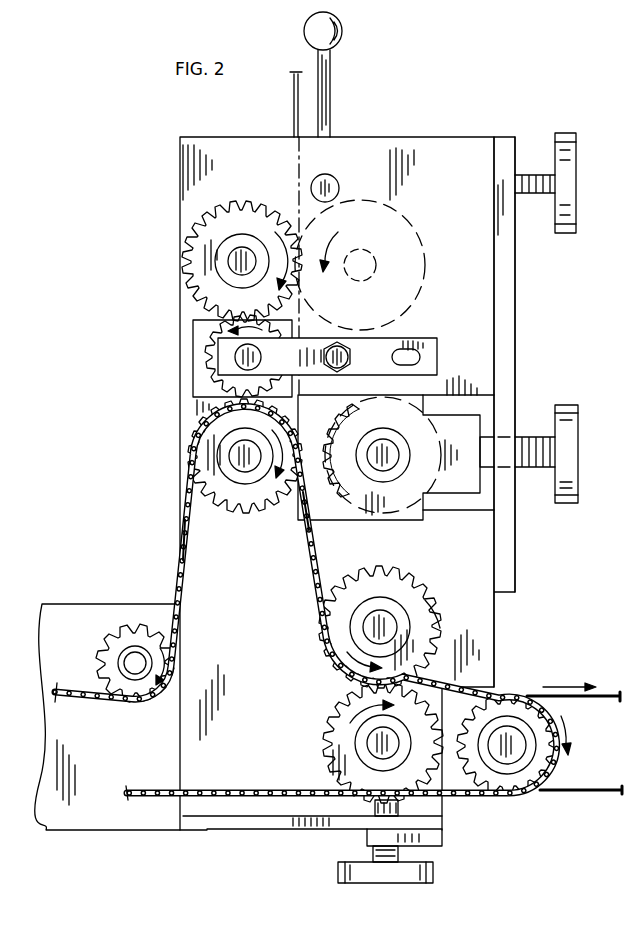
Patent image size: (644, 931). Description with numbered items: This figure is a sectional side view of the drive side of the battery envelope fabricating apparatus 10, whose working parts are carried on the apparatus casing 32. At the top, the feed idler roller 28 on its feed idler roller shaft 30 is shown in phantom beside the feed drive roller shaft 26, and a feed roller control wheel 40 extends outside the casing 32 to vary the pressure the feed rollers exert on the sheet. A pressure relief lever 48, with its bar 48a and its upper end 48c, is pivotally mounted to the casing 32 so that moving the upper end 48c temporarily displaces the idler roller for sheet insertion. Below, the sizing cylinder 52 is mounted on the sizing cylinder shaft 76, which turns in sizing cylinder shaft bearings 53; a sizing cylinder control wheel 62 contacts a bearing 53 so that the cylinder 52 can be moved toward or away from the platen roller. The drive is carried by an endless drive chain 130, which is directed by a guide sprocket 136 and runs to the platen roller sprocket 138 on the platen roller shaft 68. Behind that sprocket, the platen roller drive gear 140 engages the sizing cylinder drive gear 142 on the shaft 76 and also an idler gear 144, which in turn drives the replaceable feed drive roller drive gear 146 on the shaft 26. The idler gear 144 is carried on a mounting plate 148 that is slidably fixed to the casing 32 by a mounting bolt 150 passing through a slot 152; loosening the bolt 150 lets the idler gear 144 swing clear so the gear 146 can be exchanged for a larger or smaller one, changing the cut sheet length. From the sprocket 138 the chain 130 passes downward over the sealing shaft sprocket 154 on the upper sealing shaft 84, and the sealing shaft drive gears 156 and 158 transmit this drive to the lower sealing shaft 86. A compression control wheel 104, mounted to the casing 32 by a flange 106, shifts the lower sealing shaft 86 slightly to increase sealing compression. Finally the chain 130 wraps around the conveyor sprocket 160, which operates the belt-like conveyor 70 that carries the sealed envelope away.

The apparatus for fabricating battery envelopes 10 is at (597, 307).
The feed drive roller shaft 26 is at (250, 250).
The feed idler roller 28 is at (430, 212).
The feed idler roller shaft 30 is at (420, 265).
The apparatus casing 32 is at (505, 278).
The feed roller control wheel 40 is at (566, 133).
The pressure relief lever 48 is at (332, 92).
The bar 48a is at (324, 176).
The upper end of pressure relief lever 48c is at (343, 30).
The sizing cylinder 52 is at (452, 500).
The sizing cylinder shaft bearings 53 is at (410, 420).
The sizing cylinder control wheel 62 is at (565, 505).
The platen roller shaft 68 is at (251, 474).
The conveyor 70 is at (601, 693).
The sizing cylinder shaft 76 is at (410, 458).
The upper sealing shaft 84 is at (392, 617).
The lower sealing shaft 86 is at (360, 742).
The compression control wheel 104 is at (340, 871).
The flange 106 is at (444, 842).
The drive chain 130 is at (188, 595).
The guide sprocket 136 is at (128, 624).
The platen roller sprocket 138 is at (209, 500).
The platen roller drive gear 140 is at (238, 520).
The sizing cylinder drive gear 142 is at (304, 497).
The idler gear 144 is at (213, 355).
The feed drive roller drive gear 146 is at (185, 243).
The mounting plate 148 is at (432, 337).
The mounting bolt 150 is at (335, 346).
The slot 152 is at (398, 362).
The sealing shaft sprocket 154 is at (391, 577).
The sealing shaft drive gear 156 is at (426, 598).
The sealing shaft drive gear 158 is at (332, 712).
The conveyor sprocket 160 is at (464, 795).